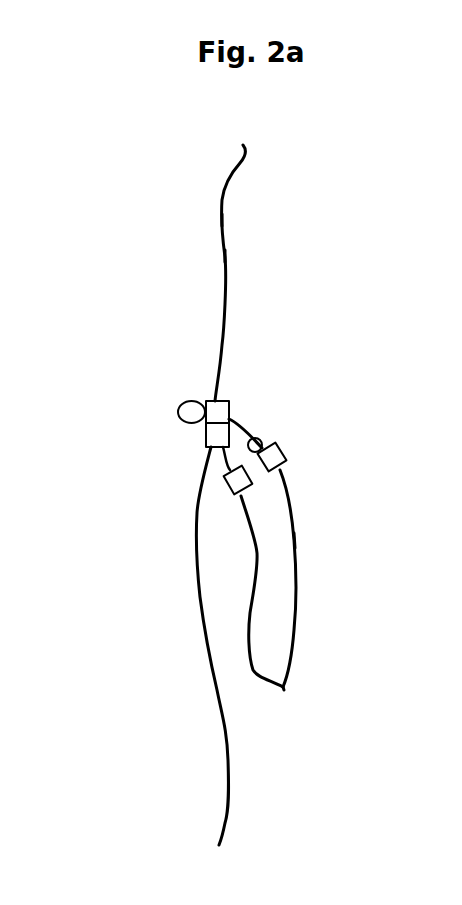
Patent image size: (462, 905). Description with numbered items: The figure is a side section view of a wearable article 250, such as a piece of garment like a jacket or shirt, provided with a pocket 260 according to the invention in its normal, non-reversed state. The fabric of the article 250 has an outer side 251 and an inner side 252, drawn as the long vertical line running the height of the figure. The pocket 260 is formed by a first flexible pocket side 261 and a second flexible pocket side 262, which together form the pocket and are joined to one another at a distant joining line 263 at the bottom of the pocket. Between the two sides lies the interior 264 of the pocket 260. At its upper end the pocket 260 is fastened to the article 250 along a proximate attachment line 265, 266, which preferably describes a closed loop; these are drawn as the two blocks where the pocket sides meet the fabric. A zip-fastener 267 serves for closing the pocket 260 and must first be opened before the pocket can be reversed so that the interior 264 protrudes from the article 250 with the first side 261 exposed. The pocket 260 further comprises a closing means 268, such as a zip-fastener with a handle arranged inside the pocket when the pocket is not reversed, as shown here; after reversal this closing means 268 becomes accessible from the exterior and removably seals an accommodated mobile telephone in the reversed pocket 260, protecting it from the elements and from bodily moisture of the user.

The article 250 is at (236, 273).
The outer side 251 is at (224, 256).
The inner side 252 is at (223, 220).
The pocket 260 is at (276, 553).
The first flexible pocket side 261 is at (294, 540).
The second flexible pocket side 262 is at (248, 652).
The distant joining line 263 is at (284, 690).
The interior 264 is at (253, 567).
The proximate attachment line 265 is at (212, 395).
The proximate attachment line 266 is at (197, 443).
The zip-fastener 267 is at (178, 410).
The closing means 268 is at (281, 450).